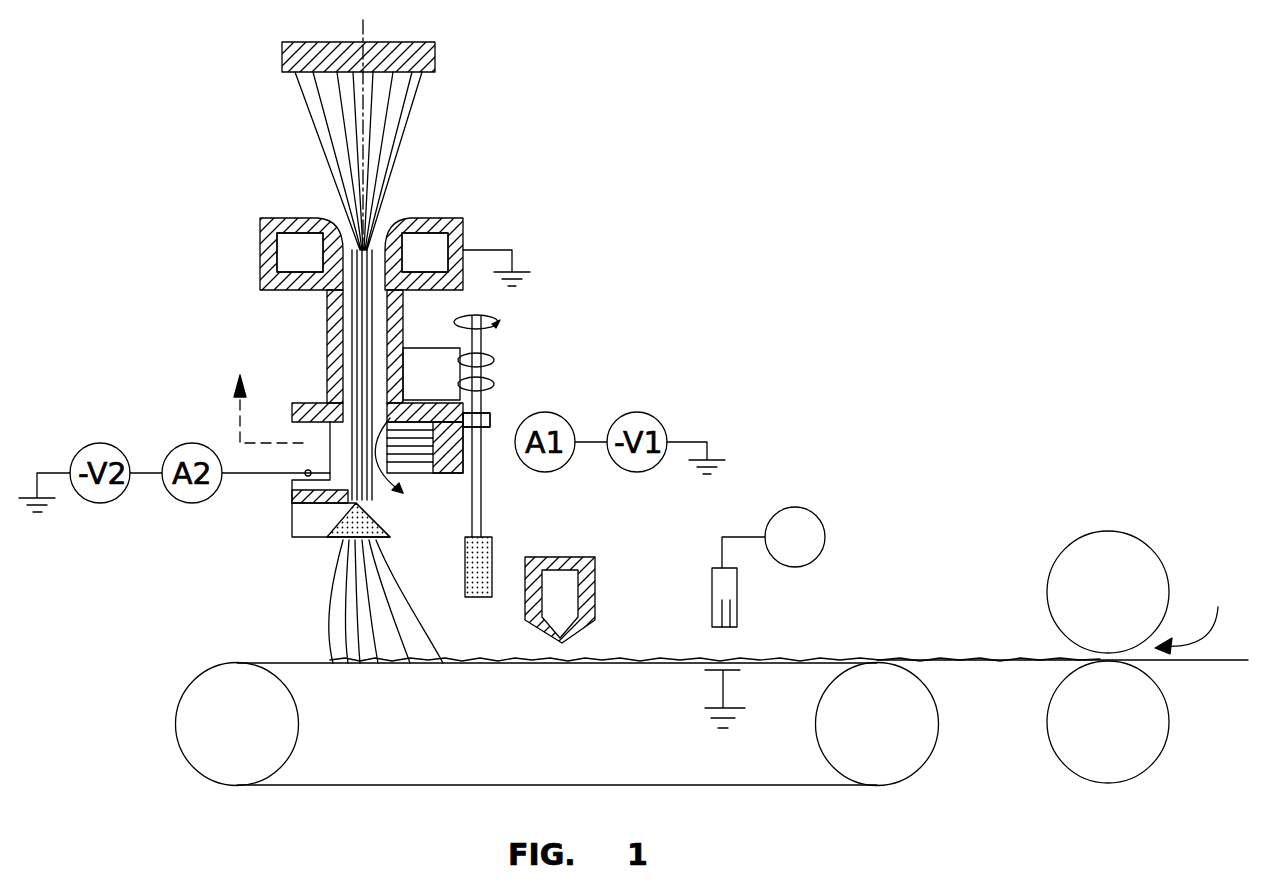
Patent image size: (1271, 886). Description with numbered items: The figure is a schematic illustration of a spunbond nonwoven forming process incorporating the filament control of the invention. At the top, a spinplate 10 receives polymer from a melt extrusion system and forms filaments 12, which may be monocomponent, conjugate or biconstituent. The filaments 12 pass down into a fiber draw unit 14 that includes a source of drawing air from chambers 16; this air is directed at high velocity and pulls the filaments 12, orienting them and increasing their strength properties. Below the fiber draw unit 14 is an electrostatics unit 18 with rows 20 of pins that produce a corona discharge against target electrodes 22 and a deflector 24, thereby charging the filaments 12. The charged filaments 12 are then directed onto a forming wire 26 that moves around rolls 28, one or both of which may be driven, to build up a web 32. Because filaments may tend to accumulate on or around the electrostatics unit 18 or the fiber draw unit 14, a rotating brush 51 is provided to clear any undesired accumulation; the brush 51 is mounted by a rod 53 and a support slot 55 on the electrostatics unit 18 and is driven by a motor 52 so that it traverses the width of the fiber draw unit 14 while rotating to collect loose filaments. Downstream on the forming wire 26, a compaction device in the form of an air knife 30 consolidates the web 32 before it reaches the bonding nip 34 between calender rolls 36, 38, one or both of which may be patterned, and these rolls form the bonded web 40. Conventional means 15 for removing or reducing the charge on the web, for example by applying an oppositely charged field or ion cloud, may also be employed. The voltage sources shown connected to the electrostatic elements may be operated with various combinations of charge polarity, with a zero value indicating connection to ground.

The spinplate 10 is at (436, 46).
The filaments 12 is at (398, 150).
The fiber draw unit 14 is at (260, 228).
The chambers 16 is at (300, 253).
The electrostatics unit 18 is at (447, 455).
The rows of pins 20 is at (412, 467).
The target electrodes 22 is at (327, 453).
The deflector 24 is at (292, 510).
The forming wire 26 is at (305, 663).
The rolls 28 is at (256, 746).
The air knife 30 is at (588, 553).
The web 32 is at (485, 660).
The bonding nip 34 is at (1195, 609).
The calender roll 36 is at (1128, 608).
The calender roll 38 is at (1128, 736).
The bonded web 40 is at (1208, 663).
The rotating brush 51 is at (493, 545).
The motor 52 is at (435, 348).
The rod 53 is at (482, 320).
The support slot 55 is at (490, 413).
The means for removing or reducing the charge 15 is at (737, 593).